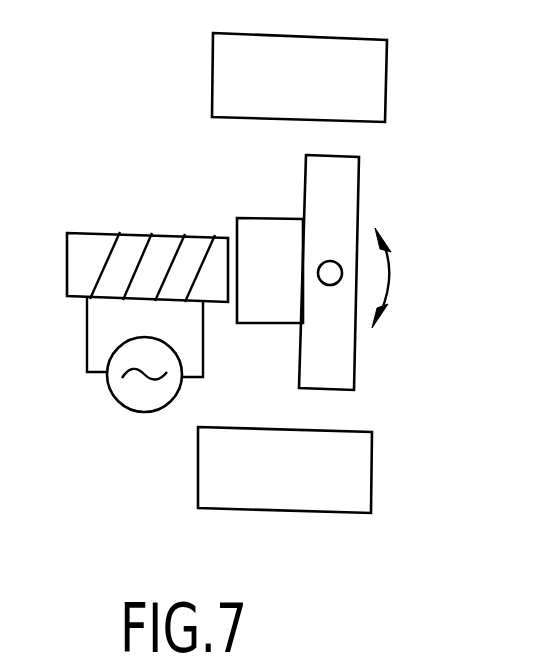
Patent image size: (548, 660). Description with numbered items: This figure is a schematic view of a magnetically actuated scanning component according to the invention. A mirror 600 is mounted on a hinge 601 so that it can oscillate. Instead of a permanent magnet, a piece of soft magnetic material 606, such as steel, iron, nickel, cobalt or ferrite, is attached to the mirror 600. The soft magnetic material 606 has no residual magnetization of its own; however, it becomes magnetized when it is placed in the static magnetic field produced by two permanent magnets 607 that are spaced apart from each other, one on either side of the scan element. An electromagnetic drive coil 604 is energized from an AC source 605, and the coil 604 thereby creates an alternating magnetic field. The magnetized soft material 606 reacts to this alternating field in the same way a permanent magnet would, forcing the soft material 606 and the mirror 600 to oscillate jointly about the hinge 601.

The mirror 600 is at (323, 213).
The hinge 601 is at (342, 266).
The electromagnetic drive coil 604 is at (92, 253).
The AC source 605 is at (135, 387).
The soft magnetic material 606 is at (252, 237).
The permanent magnets 607 is at (365, 50).